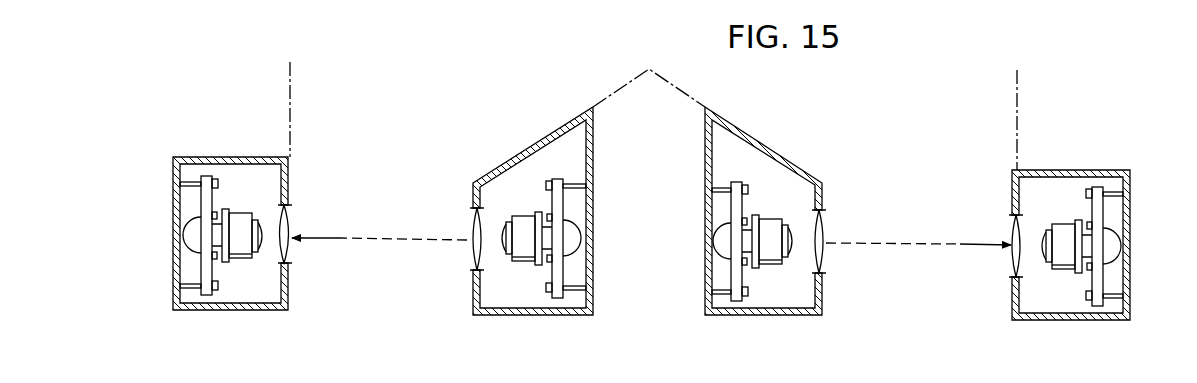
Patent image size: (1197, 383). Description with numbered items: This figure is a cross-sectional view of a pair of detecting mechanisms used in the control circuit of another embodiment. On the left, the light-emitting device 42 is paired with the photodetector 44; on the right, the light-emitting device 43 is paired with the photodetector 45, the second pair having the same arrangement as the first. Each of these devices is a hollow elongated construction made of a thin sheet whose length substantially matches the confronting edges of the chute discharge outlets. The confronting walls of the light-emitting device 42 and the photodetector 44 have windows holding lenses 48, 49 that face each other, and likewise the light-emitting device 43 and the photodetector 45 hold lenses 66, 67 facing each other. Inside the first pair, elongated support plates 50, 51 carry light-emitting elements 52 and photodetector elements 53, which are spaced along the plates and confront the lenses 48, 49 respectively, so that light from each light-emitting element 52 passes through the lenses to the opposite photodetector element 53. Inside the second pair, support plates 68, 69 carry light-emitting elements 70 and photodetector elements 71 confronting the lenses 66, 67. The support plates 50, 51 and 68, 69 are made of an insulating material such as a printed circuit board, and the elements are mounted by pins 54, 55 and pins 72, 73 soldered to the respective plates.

The light-emitting device 42 is at (537, 146).
The light-emitting device 43 is at (781, 156).
The photodetector 44 is at (173, 197).
The photodetector 45 is at (1128, 278).
The lens 48 is at (472, 232).
The lens 49 is at (291, 226).
The support plate 50 is at (556, 178).
The support plate 51 is at (212, 178).
The light-emitting element 52 is at (523, 263).
The photodetector element 53 is at (238, 261).
The pin 54 is at (582, 228).
The pin 55 is at (181, 243).
The lens 66 is at (826, 236).
The lens 67 is at (1010, 253).
The support plate 68 is at (737, 182).
The support plate 69 is at (1092, 206).
The light-emitting element 70 is at (768, 265).
The photodetector element 71 is at (1058, 269).
The pin 72 is at (711, 249).
The pin 73 is at (1116, 240).